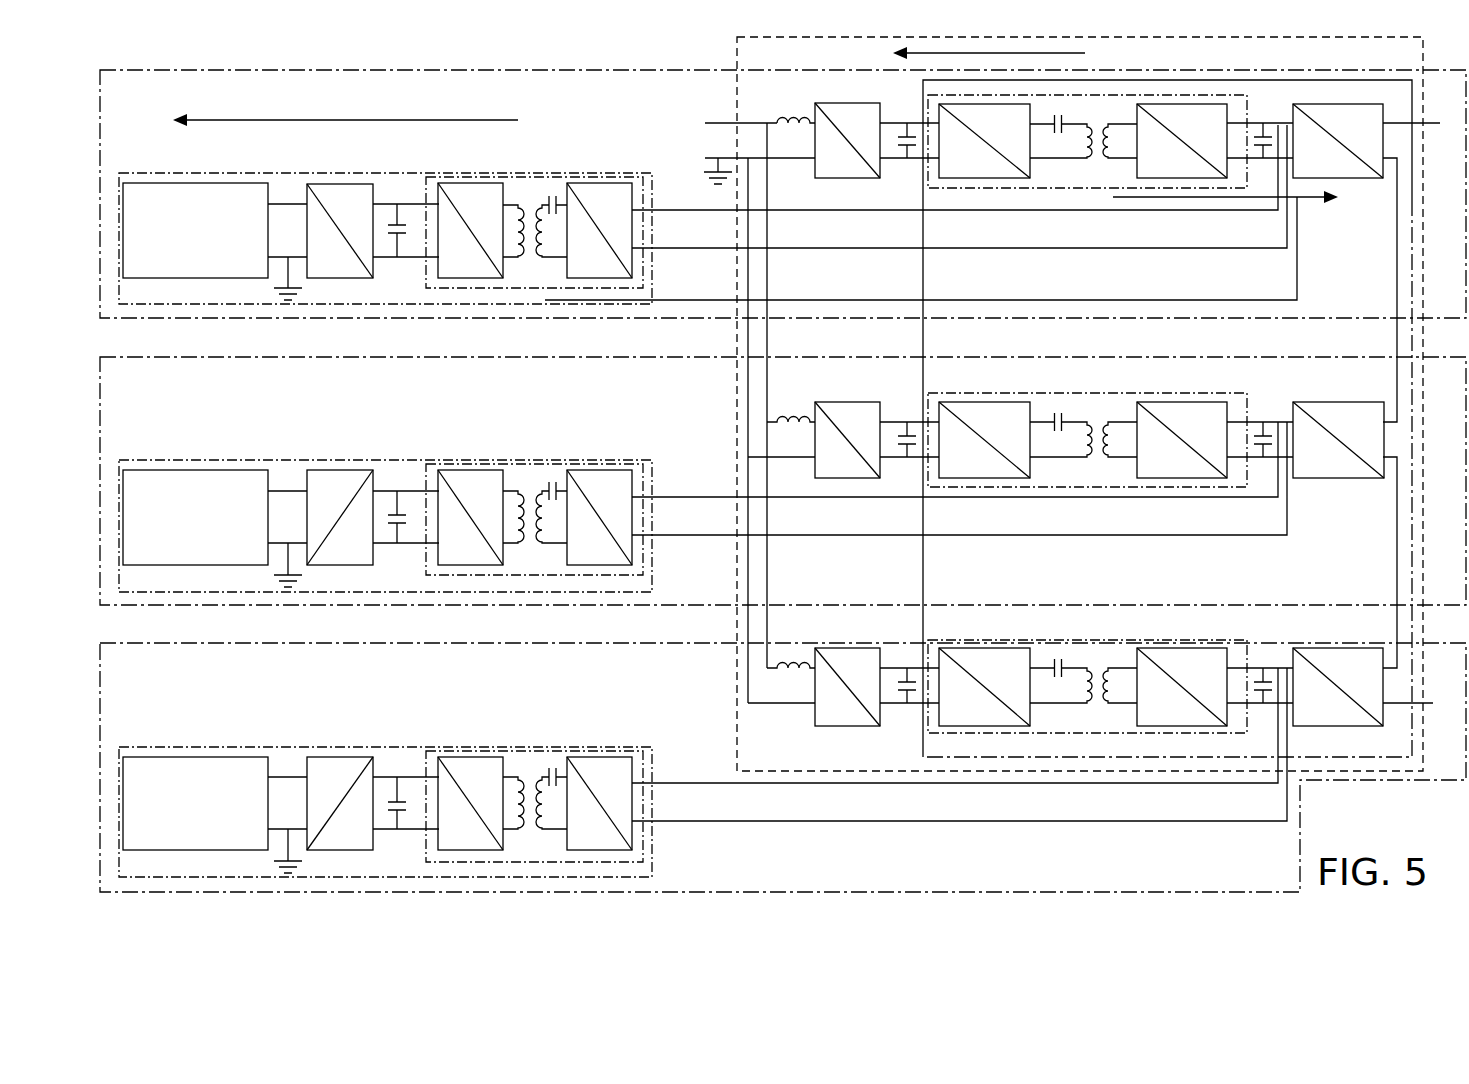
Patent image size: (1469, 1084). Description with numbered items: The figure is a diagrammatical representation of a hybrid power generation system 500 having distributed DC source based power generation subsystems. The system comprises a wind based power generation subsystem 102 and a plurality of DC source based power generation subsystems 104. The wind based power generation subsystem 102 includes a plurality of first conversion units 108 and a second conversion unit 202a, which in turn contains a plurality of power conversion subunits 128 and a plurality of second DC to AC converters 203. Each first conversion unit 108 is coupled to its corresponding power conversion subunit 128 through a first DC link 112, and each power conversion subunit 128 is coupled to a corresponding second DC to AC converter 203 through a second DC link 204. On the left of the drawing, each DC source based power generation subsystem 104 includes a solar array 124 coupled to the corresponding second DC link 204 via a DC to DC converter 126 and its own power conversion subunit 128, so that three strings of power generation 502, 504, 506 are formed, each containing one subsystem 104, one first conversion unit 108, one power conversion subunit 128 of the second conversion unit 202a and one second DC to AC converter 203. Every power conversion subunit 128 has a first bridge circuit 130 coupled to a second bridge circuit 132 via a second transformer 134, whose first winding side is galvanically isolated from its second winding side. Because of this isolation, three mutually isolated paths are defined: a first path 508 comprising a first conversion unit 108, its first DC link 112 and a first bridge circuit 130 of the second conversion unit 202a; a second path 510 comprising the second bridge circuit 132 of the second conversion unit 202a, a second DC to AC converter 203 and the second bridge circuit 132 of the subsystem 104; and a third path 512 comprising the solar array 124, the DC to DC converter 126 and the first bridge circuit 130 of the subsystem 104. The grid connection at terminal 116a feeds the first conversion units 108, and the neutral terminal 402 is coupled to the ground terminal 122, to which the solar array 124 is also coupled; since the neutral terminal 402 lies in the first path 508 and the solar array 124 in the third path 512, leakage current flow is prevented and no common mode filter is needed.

The hybrid power generation system 500 is at (1341, 806).
The string of power generation 502 is at (428, 68).
The string of power generation 504 is at (370, 355).
The string of power generation 506 is at (512, 641).
The third path 512 is at (318, 117).
The first path 508 is at (895, 53).
The wind based power generation subsystem 102 is at (737, 55).
The second conversion unit 202a is at (1380, 80).
The DC source based power generation subsystem 104 is at (145, 172).
The solar array 124 is at (230, 182).
The DC to DC converter 126 is at (352, 182).
The ground terminal 122 is at (292, 594).
The power conversion subunit 128 is at (552, 176).
The first bridge circuit 130 is at (467, 178).
The second bridge circuit 132 is at (613, 181).
The second transformer 134 is at (531, 270).
The second path 510 is at (1297, 283).
The second DC to AC converter 203 is at (1365, 180).
The grid line R1 connection 116a is at (717, 122).
The neutral terminal 402 is at (712, 163).
The first conversion unit 108 is at (862, 103).
The first DC link 112 is at (905, 148).
The second DC link 204 is at (1265, 136).